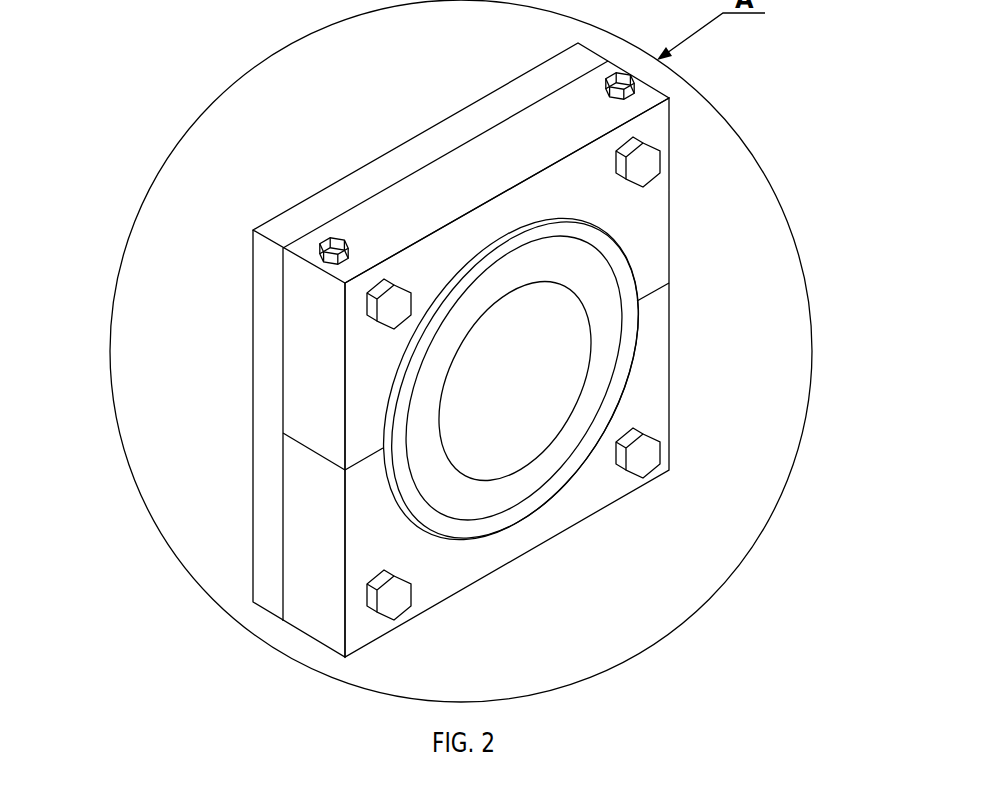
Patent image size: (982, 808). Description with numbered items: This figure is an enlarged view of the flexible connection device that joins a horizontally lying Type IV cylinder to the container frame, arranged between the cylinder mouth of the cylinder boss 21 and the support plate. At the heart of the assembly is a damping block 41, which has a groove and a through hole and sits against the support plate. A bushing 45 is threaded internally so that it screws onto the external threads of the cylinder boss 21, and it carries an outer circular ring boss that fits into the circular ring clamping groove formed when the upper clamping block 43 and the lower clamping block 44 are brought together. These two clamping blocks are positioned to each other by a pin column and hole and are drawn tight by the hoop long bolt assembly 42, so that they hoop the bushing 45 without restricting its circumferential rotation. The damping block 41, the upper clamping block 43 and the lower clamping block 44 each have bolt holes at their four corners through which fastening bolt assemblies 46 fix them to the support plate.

The boss 21 is at (619, 378).
The damping block 41 is at (356, 163).
The hoop long bolt assembly 42 is at (338, 168).
The upper clamping block 43 is at (194, 443).
The lower clamping block 44 is at (611, 377).
The bushing 45 is at (604, 379).
The fastening bolt assembly 46 is at (622, 345).